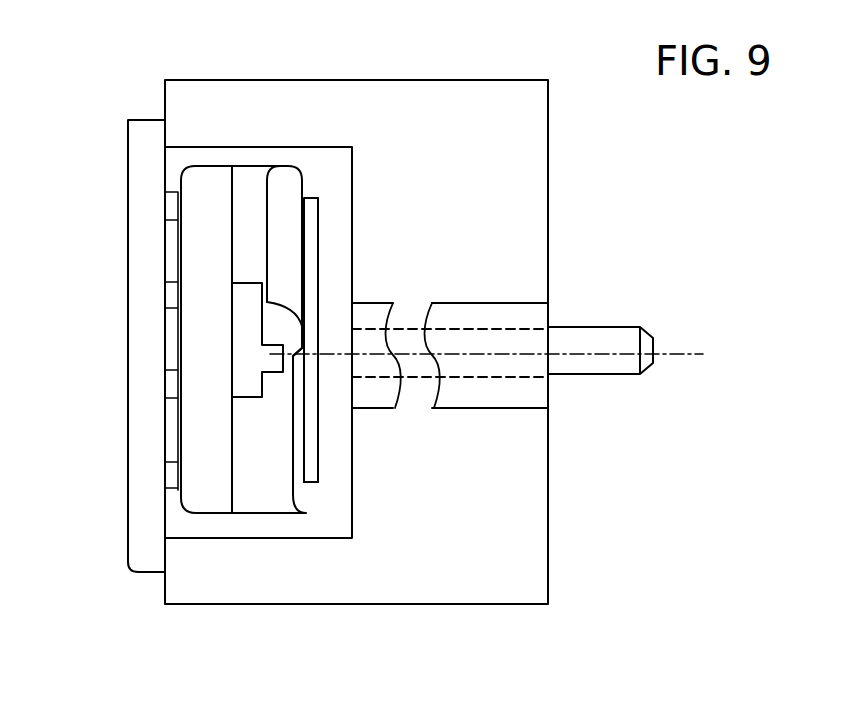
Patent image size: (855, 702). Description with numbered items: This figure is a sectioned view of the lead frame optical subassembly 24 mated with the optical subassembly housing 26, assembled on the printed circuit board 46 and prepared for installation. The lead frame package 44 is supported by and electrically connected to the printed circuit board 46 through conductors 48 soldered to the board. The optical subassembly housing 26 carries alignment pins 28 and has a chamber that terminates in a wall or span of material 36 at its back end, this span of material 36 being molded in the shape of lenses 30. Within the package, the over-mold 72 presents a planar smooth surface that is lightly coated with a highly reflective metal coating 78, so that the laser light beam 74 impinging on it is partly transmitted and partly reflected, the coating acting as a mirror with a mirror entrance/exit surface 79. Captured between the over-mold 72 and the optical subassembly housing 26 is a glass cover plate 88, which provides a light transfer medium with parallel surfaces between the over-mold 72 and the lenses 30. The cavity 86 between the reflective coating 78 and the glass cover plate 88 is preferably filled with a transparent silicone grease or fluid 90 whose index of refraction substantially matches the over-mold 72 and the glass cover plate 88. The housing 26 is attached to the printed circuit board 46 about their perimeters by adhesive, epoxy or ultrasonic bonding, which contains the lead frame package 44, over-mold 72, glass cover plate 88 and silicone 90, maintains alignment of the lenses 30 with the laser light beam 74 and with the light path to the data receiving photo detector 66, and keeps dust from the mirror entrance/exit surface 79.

The optical subassembly 24 is at (250, 377).
The optical subassembly housing 26 is at (502, 85).
The alignment pin 28 is at (628, 335).
The lens 30 is at (408, 357).
The wall or span of material 36 is at (411, 312).
The lead frame package 44 is at (220, 477).
The printed circuit board 46 is at (153, 565).
The conductor 48 is at (172, 208).
The data receiving photo detector 66 is at (280, 192).
The over-mold 72 is at (278, 332).
The laser light beam 74 is at (502, 355).
The reflective metal coating 78 is at (293, 350).
The mirror entrance/exit surface 79 is at (303, 357).
The cavity 86 is at (298, 397).
The glass cover plate 88 is at (311, 480).
The silicone grease or fluid 90 is at (322, 170).